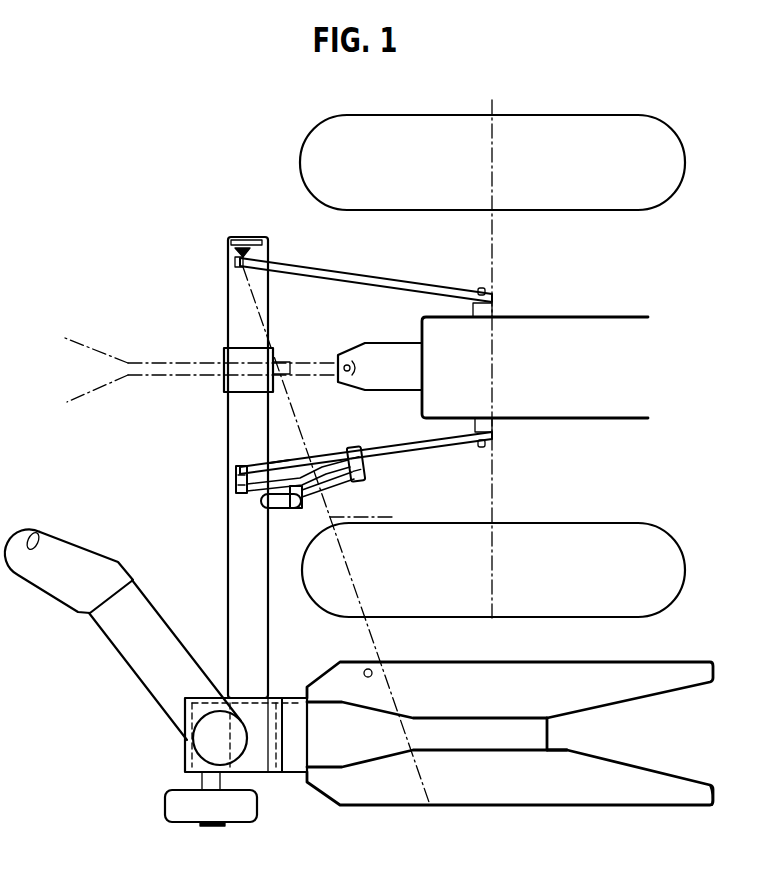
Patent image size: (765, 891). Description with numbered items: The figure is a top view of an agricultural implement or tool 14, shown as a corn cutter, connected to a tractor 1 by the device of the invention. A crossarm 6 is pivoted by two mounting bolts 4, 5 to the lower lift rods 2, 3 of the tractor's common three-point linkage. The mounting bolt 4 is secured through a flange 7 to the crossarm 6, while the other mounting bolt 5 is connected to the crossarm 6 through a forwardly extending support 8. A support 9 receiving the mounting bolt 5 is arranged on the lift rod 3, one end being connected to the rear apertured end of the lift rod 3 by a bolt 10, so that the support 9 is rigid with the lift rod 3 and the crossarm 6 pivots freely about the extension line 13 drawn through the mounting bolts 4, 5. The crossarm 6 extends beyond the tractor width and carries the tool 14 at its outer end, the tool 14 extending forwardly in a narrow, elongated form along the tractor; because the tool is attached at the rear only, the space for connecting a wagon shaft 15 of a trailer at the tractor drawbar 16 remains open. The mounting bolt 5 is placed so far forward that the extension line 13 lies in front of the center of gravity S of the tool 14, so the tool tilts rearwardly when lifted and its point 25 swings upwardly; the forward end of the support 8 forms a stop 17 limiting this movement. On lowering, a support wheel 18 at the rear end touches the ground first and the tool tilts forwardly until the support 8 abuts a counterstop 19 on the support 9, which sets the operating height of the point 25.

The tractor 1 is at (588, 316).
The lower lift rod 2 is at (438, 290).
The lower lift rod 3 is at (445, 448).
The mounting bolt 4 is at (236, 263).
The mounting bolt 5 is at (322, 467).
The crossarm 6 is at (228, 427).
The flange 7 is at (254, 242).
The forwardly extending support 8 is at (355, 484).
The support 9 is at (279, 468).
The bolt 10 is at (237, 470).
The extension line 13 is at (395, 517).
The agricultural implement or tool 14 is at (470, 808).
The wagon shaft 15 is at (168, 347).
The tractor drawbar 16 is at (358, 342).
The stop 17 is at (367, 474).
The support wheel 18 is at (181, 822).
The counterstop 19 is at (296, 510).
The point of the tool 25 is at (712, 808).
The center of gravity S is at (367, 667).